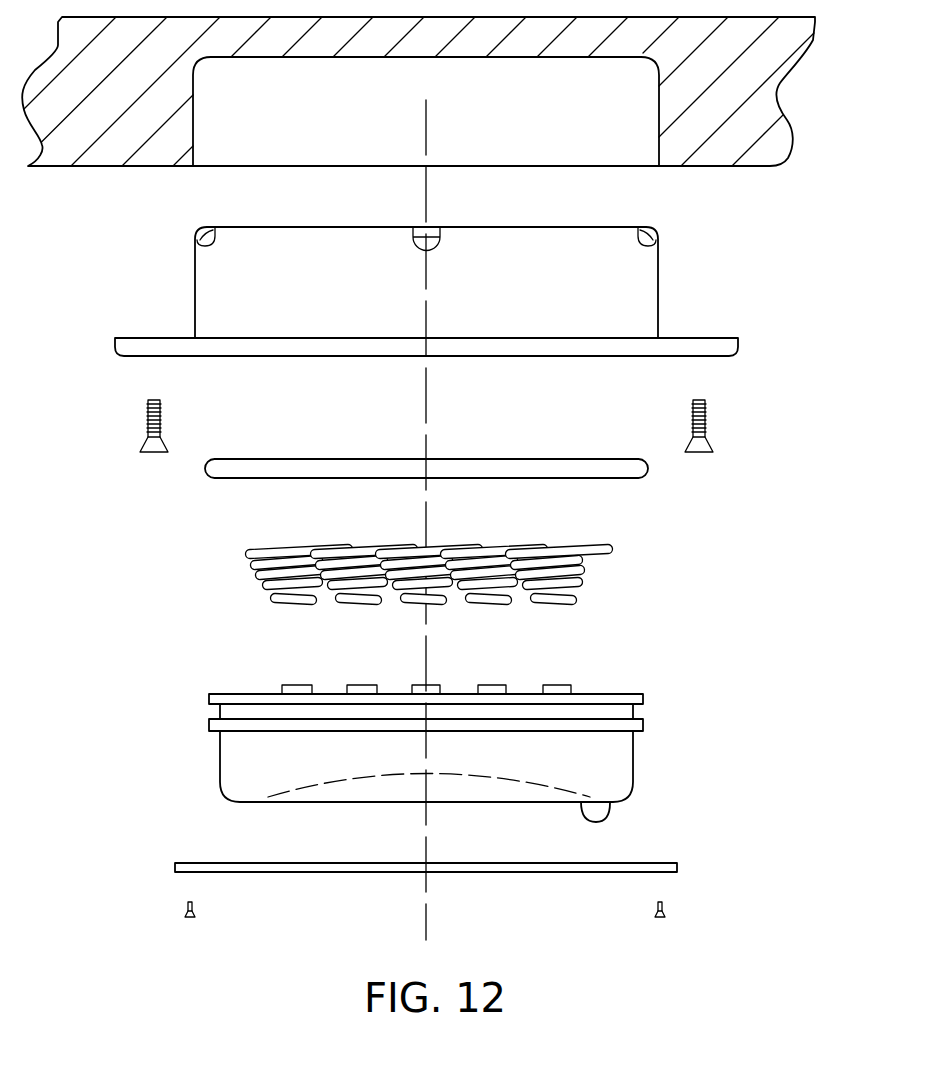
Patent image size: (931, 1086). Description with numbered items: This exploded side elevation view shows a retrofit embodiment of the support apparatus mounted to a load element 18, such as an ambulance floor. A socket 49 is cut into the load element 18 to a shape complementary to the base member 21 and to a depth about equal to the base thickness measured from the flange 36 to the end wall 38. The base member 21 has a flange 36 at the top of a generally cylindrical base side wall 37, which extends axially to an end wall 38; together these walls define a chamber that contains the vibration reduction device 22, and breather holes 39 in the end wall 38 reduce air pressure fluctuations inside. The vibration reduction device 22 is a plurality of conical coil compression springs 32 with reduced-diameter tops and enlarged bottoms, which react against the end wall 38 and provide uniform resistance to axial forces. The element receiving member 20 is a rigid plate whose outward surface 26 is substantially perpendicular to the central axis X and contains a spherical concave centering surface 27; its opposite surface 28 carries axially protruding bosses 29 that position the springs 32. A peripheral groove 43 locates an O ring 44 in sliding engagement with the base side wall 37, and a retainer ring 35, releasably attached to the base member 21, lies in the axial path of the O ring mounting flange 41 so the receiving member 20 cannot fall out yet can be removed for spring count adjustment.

The load element 18 is at (755, 168).
The socket 49 is at (268, 117).
The base member 21 is at (451, 294).
The flange 36 is at (681, 348).
The base side wall 37 is at (615, 286).
The end wall 38 is at (540, 226).
The breather holes 39 is at (205, 236).
The O ring 44 is at (544, 470).
The vibration reduction device 22 is at (464, 557).
The conical coil compression springs 32 is at (362, 549).
The element receiving member 20 is at (438, 742).
The surface 28 is at (617, 693).
The bosses 29 is at (558, 686).
The peripheral groove 43 is at (212, 708).
The O ring mounting flange 41 is at (214, 733).
The concave centering surface 27 is at (400, 787).
The outward surface 26 is at (600, 787).
The retainer ring 35 is at (532, 869).
The central axis X is at (425, 121).